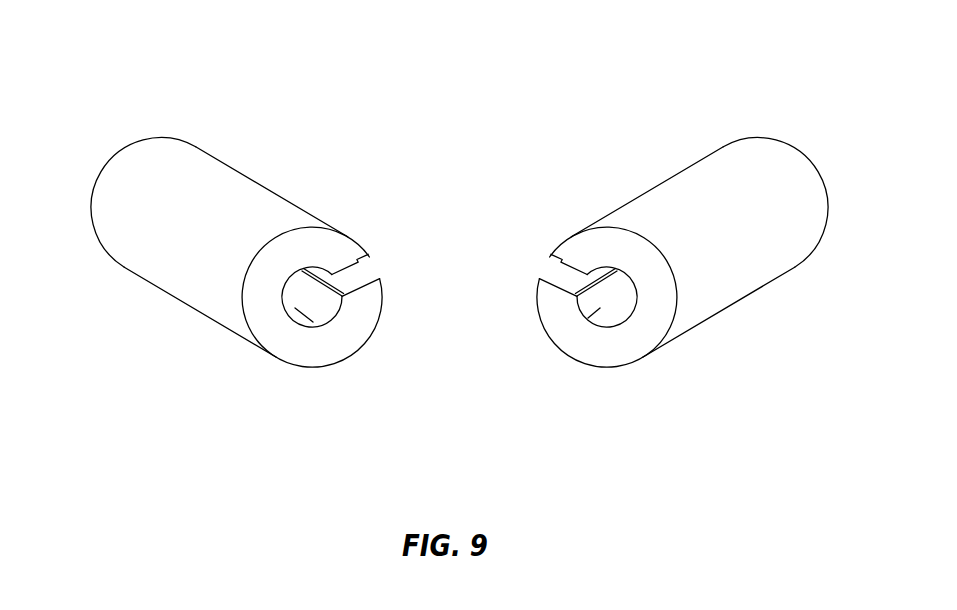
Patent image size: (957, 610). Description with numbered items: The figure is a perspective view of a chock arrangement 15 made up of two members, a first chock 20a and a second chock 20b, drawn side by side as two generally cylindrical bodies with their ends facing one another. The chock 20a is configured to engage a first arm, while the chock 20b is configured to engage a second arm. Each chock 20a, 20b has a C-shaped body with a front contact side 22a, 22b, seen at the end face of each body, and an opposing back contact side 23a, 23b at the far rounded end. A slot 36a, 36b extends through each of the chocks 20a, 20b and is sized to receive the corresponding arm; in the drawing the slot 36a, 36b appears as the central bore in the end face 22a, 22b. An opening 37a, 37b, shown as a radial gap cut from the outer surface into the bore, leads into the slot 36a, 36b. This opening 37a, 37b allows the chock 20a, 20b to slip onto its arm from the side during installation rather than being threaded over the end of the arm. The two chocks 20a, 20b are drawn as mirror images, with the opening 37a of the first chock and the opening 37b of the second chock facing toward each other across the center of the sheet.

The roller assembly 15 is at (462, 138).
The chock 20a is at (188, 285).
The chock 20b is at (732, 285).
The front contact side 22a is at (291, 333).
The front contact side 22b is at (592, 342).
The back contact side 23a is at (112, 157).
The back contact side 23b is at (807, 158).
The slot 36a is at (318, 303).
The slot 36b is at (625, 300).
The opening 37a is at (360, 262).
The opening 37b is at (550, 262).